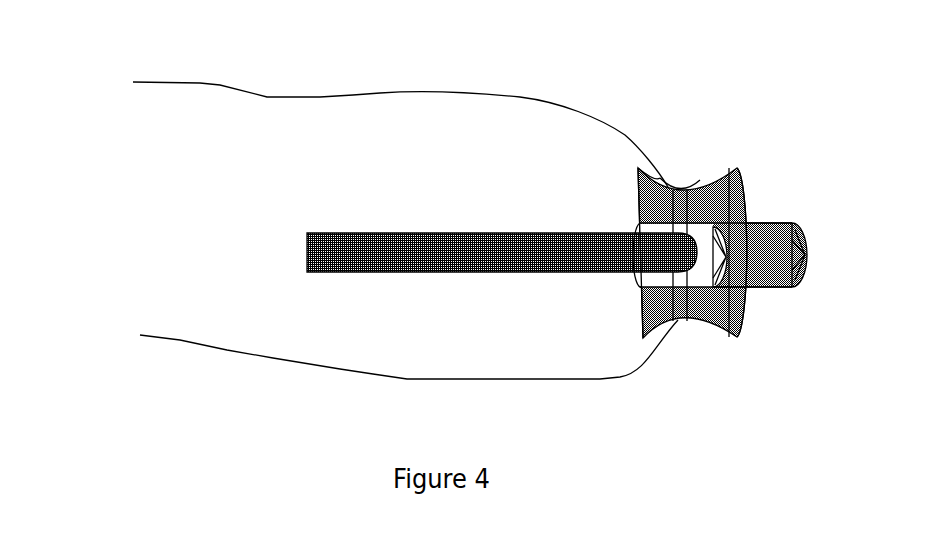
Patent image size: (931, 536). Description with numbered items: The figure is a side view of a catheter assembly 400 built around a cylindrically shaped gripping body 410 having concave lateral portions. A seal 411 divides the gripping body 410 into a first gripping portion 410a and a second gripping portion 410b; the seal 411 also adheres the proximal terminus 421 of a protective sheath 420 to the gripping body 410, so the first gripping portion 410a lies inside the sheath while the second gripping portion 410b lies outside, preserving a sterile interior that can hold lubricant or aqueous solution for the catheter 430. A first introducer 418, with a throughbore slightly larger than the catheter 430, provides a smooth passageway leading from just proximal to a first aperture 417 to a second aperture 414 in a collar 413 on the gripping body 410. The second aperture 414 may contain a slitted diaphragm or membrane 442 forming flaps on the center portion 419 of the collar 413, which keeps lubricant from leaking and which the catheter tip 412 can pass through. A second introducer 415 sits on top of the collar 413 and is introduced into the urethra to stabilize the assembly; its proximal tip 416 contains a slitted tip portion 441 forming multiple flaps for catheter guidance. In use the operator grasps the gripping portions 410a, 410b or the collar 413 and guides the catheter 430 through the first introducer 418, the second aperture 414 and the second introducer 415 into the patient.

The catheter assembly 400 is at (100, 212).
The gripping body 410 is at (692, 312).
The first gripping portion 410a is at (660, 328).
The second gripping portion 410b is at (707, 328).
The seal 411 is at (682, 188).
The catheter tip 412 is at (752, 226).
The collar 413 is at (735, 252).
The second aperture 414 is at (730, 287).
The second introducer 415 is at (792, 243).
The proximal tip 416 is at (815, 243).
The first aperture 417 is at (633, 285).
The first introducer 418 is at (650, 217).
The center portion 419 is at (748, 195).
The protective sheath 420 is at (353, 95).
The proximal terminus 421 is at (660, 176).
The catheter 430 is at (320, 233).
The slitted tip portion 441 is at (803, 275).
The slitted diaphragm or membrane 442 is at (727, 275).